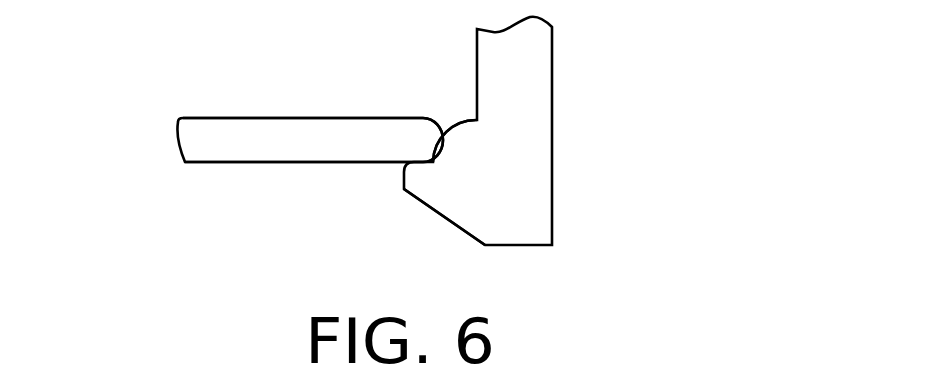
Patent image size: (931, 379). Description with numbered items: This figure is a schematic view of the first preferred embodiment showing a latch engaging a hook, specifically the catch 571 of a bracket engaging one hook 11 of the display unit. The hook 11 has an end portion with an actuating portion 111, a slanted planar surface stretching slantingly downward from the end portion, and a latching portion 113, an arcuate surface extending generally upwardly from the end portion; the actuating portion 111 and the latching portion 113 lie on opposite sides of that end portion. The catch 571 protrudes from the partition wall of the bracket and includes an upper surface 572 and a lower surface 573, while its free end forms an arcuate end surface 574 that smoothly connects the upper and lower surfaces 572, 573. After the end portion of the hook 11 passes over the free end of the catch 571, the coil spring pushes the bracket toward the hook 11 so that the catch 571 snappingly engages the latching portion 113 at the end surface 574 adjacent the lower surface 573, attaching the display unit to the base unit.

The hook 11 is at (532, 115).
The actuating portion 111 is at (440, 216).
The latching portion 113 is at (472, 120).
The catch 571 is at (220, 146).
The upper surface 572 is at (275, 118).
The lower surface 573 is at (316, 162).
The arcuate end surface 574 is at (443, 138).